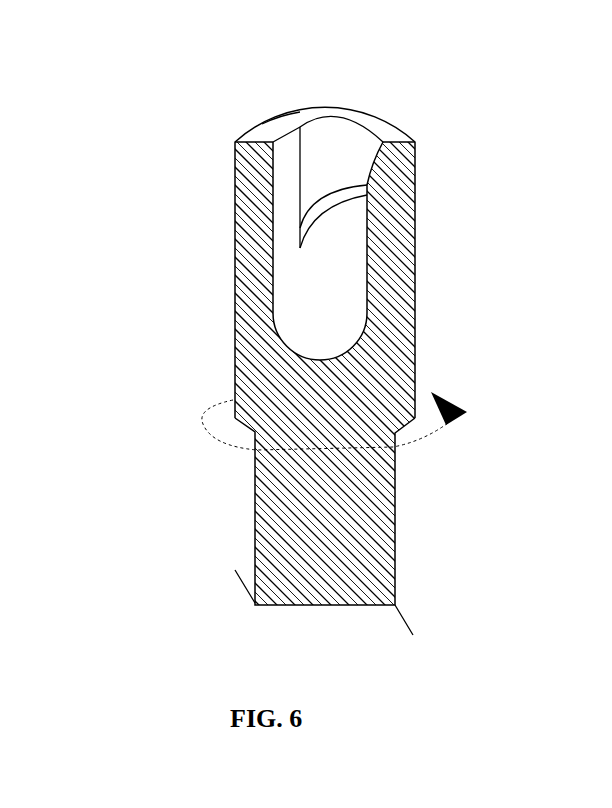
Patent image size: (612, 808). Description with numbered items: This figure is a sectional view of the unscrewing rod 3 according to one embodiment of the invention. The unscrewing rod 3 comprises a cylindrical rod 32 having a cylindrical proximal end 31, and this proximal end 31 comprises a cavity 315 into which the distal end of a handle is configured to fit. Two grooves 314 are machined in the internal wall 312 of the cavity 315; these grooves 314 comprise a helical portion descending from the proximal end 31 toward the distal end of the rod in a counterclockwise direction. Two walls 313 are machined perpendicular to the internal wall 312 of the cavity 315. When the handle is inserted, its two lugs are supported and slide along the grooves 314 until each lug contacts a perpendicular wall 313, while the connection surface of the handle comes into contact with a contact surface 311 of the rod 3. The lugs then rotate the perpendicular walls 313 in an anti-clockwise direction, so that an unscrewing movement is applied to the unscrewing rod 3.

The unscrewing rod 3 is at (306, 324).
The cylindrical proximal end 31 is at (303, 215).
The cylindrical rod 32 is at (253, 472).
The contact surface 311 is at (280, 115).
The internal wall 312 is at (345, 140).
The perpendicular wall 313 is at (308, 143).
The groove 314 is at (335, 188).
The cavity 315 is at (315, 270).